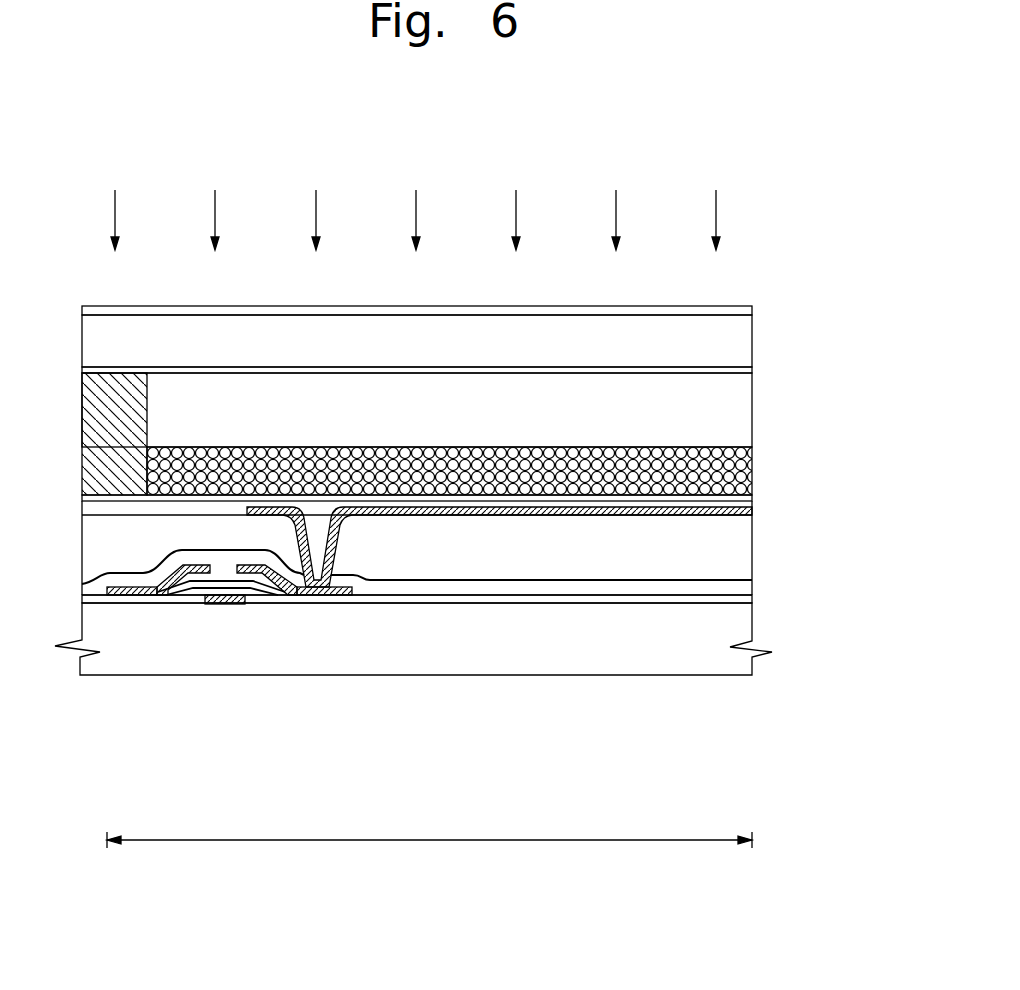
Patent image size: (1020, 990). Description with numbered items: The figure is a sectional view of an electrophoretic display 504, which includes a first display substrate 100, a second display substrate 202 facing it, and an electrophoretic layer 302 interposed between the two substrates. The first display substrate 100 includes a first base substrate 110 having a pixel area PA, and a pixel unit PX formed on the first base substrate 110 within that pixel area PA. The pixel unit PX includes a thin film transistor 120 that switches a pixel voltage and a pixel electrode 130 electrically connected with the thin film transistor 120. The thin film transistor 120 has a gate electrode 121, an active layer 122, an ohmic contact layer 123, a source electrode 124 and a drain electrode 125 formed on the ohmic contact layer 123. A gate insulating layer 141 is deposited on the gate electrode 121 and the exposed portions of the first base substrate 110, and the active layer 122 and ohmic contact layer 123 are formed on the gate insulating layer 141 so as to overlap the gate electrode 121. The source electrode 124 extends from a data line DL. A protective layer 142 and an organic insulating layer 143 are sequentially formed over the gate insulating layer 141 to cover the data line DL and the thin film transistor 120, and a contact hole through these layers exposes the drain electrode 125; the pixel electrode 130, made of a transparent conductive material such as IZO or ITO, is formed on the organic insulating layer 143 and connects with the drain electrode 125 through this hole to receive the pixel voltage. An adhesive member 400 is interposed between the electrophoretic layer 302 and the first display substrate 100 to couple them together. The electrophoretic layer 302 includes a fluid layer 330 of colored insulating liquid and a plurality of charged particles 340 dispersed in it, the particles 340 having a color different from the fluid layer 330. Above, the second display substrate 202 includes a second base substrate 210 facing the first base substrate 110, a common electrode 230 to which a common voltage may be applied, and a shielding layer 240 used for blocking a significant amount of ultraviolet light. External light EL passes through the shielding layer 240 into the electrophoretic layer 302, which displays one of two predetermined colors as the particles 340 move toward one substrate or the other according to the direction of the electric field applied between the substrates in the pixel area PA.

The electrophoretic display 504 is at (780, 128).
The external light EL is at (718, 213).
The second display substrate 202 is at (492, 342).
The shielding layer 240 is at (740, 308).
The second base substrate 210 is at (740, 338).
The common electrode 230 is at (740, 370).
The electrophoretic layer 302 is at (492, 434).
The fluid layer 330 is at (740, 410).
The particles 340 is at (740, 448).
The adhesive member 400 is at (740, 503).
The pixel electrode 130 is at (428, 514).
The first display substrate 100 is at (479, 595).
The organic insulating layer 143 is at (740, 550).
The protective layer 142 is at (740, 586).
The gate insulating layer 141 is at (740, 604).
The first base substrate 110 is at (446, 639).
The data line DL is at (95, 590).
The thin film transistor 120 is at (226, 669).
The gate electrode 121 is at (223, 603).
The active layer 122 is at (173, 594).
The ohmic contact layer 123 is at (273, 590).
The source electrode 124 is at (150, 594).
The drain electrode 125 is at (326, 656).
The pixel unit PX is at (202, 778).
The pixel area PA is at (429, 851).